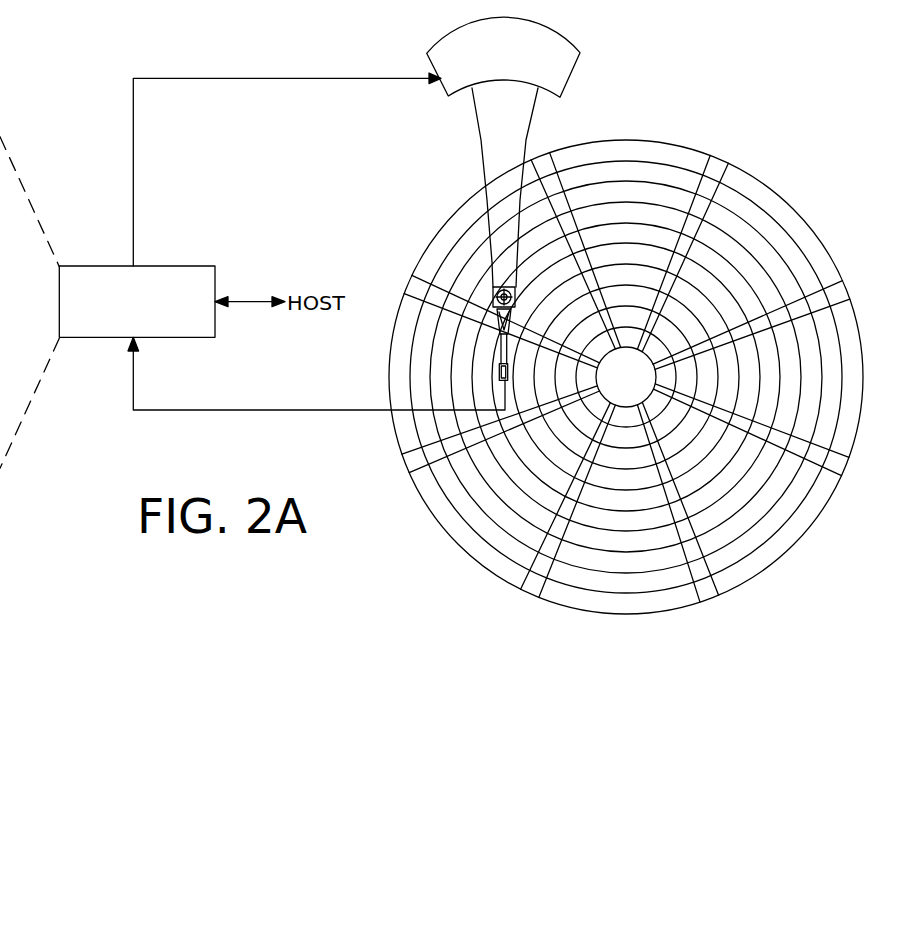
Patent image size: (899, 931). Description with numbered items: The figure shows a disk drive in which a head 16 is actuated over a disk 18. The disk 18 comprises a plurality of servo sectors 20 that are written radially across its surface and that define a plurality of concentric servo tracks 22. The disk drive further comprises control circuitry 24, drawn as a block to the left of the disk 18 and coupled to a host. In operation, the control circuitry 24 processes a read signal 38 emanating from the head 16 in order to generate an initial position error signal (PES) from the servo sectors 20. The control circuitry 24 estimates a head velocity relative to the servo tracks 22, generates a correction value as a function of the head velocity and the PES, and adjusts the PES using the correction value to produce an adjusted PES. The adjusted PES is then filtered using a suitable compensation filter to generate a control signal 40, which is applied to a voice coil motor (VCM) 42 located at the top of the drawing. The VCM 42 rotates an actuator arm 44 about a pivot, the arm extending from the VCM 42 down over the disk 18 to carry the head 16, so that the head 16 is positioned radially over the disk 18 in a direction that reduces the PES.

The head 16 is at (496, 378).
The disk 18 is at (790, 192).
The servo sectors 20 is at (720, 163).
The servo tracks 22 is at (625, 173).
The control circuitry 24 is at (177, 266).
The read signal 38 is at (282, 410).
The control signal 40 is at (133, 156).
The voice coil motor (VCM) 42 is at (443, 83).
The actuator arm 44 is at (487, 174).